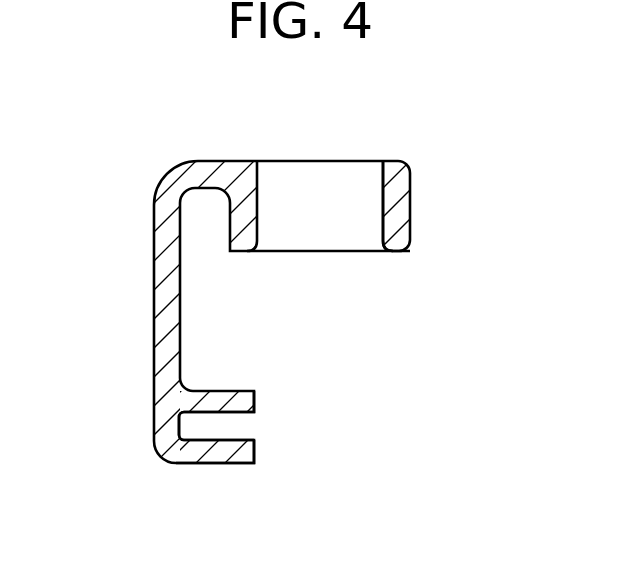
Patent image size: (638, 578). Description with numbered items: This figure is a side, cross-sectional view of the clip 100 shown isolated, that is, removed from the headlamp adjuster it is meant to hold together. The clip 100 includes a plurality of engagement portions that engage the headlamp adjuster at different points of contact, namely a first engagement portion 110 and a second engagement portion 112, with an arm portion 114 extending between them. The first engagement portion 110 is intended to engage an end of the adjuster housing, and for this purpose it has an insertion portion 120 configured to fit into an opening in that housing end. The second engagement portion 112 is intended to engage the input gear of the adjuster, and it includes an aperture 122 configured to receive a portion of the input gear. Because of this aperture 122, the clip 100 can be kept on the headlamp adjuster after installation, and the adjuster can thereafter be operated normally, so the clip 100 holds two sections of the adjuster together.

The clip 100 is at (319, 313).
The first engagement portion 110 is at (272, 395).
The second engagement portion 112 is at (399, 276).
The arm portion 114 is at (155, 305).
The insertion portion 120 is at (215, 455).
The aperture 122 is at (358, 170).